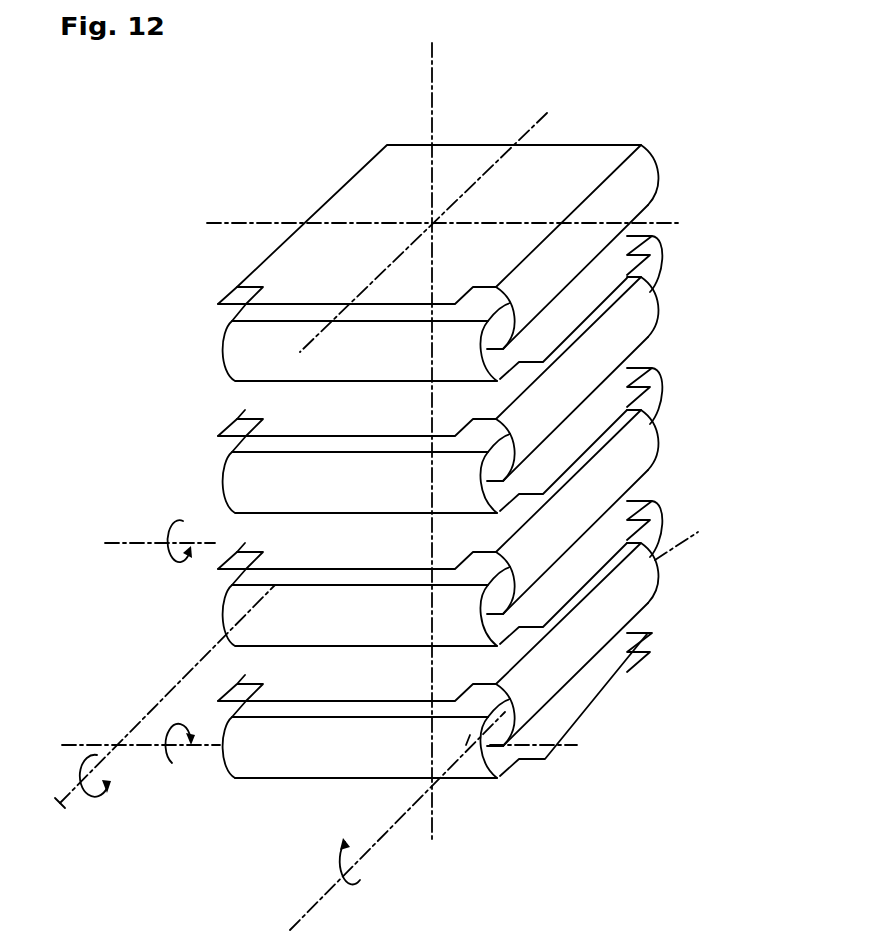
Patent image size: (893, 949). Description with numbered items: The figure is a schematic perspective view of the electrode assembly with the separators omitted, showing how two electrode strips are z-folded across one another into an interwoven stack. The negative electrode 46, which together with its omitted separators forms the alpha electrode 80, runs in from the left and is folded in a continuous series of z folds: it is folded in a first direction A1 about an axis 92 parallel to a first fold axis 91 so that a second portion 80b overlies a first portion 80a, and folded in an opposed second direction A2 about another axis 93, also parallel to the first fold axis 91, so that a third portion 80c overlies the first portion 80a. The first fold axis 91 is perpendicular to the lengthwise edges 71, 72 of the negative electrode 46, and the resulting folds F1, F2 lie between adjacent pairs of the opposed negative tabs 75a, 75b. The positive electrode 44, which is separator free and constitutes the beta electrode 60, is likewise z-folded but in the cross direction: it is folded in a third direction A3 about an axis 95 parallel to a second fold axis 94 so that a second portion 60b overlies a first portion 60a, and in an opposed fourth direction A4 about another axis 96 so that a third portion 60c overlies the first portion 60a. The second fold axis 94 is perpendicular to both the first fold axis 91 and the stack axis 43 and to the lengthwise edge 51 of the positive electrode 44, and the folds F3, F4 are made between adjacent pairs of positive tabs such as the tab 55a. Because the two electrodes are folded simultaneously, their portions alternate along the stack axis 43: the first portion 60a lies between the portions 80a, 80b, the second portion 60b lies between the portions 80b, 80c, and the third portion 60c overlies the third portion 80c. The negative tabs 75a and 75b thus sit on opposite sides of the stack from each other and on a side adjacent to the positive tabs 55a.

The stack axis 43 is at (432, 70).
The positive electrode 44 is at (575, 674).
The negative electrode 46 is at (229, 747).
The lengthwise edge 51 is at (466, 745).
The positive tab 55a is at (307, 423).
The beta electrode 60 is at (620, 603).
The first portion of the beta electrode 60a is at (510, 757).
The second portion of the beta electrode 60b is at (430, 667).
The third portion of the beta electrode 60c is at (527, 630).
The lengthwise edge 71 is at (582, 717).
The lengthwise edge 72 is at (228, 690).
The negative tab 75a is at (622, 268).
The negative tab 75b is at (240, 295).
The alpha electrode 80 is at (252, 753).
The first portion of the alpha electrode 80a is at (505, 765).
The second portion of the alpha electrode 80b is at (302, 708).
The third portion of the alpha electrode 80c is at (583, 548).
The first fold axis 91 is at (228, 222).
The axis 92 is at (70, 745).
The axis 93 is at (133, 543).
The second fold axis 94 is at (530, 130).
The axis 95 is at (318, 905).
The axis 96 is at (75, 815).
The first direction A1 is at (170, 765).
The second direction A2 is at (176, 520).
The third direction A3 is at (368, 872).
The fourth direction A4 is at (88, 797).
The fold F1 is at (348, 753).
The fold F2 is at (657, 506).
The fold F3 is at (632, 573).
The fold F4 is at (227, 642).